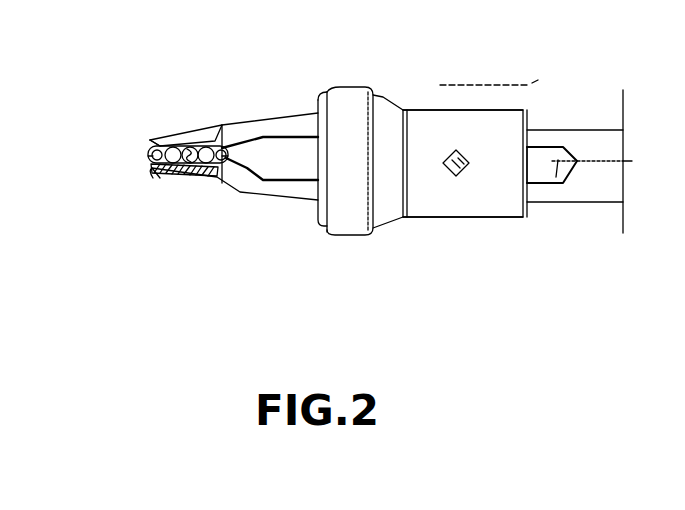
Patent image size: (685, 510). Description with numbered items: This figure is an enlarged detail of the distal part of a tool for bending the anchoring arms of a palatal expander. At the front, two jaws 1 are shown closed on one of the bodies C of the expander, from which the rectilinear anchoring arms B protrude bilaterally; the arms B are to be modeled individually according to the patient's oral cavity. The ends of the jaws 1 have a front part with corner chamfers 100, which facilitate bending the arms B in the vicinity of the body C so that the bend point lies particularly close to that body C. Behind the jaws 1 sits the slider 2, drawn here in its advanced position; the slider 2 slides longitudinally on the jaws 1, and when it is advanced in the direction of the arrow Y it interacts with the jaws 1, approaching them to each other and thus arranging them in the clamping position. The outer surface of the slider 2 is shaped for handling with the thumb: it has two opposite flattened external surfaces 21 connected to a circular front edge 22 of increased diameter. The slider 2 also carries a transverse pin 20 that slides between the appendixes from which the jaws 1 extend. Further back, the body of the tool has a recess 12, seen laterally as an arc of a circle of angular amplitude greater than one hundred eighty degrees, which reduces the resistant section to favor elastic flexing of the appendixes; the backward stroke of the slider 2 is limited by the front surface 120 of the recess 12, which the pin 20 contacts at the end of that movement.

The jaws 1 is at (223, 127).
The corner chamfers 100 is at (153, 138).
The bodies of the palatal expander C is at (157, 155).
The anchoring arms B is at (227, 148).
The circular front edge 22 is at (350, 105).
The slider 2 is at (535, 113).
The flattened external surfaces 21 is at (433, 110).
The transverse pin 20 is at (466, 172).
The recess 12 is at (566, 184).
The front surface of the recess 120 is at (650, 161).
The forward movement Y is at (489, 68).